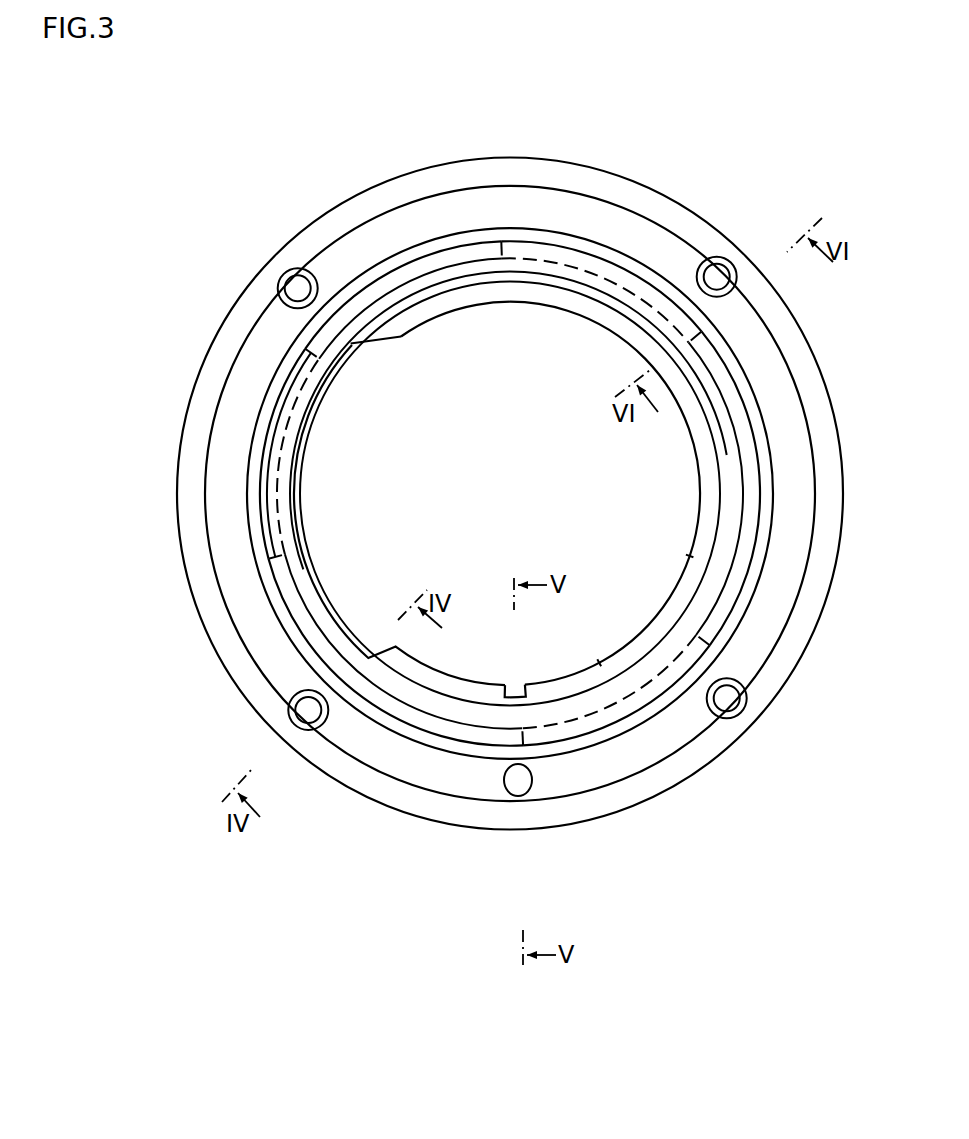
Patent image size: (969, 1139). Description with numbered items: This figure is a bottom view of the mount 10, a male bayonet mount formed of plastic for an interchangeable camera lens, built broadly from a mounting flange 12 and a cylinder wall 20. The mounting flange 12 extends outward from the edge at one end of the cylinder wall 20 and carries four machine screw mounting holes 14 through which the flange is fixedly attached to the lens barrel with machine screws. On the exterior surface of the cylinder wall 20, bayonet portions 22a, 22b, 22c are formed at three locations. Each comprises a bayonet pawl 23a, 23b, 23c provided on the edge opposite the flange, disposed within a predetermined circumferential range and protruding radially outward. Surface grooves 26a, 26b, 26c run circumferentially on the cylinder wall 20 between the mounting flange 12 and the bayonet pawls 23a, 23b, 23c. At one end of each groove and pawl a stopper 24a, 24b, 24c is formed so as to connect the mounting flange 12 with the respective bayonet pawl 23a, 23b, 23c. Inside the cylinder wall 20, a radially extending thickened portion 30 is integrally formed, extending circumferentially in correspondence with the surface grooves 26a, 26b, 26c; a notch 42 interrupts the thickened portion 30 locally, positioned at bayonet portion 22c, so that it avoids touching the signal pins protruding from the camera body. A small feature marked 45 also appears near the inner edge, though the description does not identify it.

The mount 10 is at (670, 195).
The mounting flange 12 is at (423, 185).
The machine screw mounting holes 14 is at (295, 283).
The cylinder wall 20 is at (463, 292).
The bayonet portion 22a is at (663, 690).
The bayonet portion 22b is at (633, 272).
The bayonet portion 22c is at (260, 447).
The bayonet pawl 23a is at (562, 727).
The bayonet pawl 23b is at (548, 253).
The bayonet pawl 23c is at (267, 483).
The stopper 24a is at (487, 728).
The stopper 24b is at (693, 332).
The stopper 24c is at (318, 360).
The surface groove 26a is at (597, 707).
The surface groove 26b is at (575, 245).
The surface groove 26c is at (253, 517).
The thickened portion 30 is at (610, 322).
The notch 42 is at (307, 497).
The notch 45 is at (520, 690).